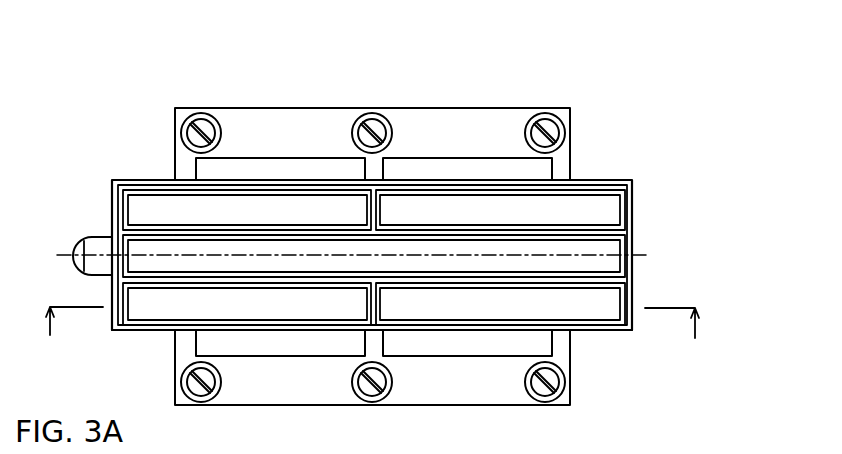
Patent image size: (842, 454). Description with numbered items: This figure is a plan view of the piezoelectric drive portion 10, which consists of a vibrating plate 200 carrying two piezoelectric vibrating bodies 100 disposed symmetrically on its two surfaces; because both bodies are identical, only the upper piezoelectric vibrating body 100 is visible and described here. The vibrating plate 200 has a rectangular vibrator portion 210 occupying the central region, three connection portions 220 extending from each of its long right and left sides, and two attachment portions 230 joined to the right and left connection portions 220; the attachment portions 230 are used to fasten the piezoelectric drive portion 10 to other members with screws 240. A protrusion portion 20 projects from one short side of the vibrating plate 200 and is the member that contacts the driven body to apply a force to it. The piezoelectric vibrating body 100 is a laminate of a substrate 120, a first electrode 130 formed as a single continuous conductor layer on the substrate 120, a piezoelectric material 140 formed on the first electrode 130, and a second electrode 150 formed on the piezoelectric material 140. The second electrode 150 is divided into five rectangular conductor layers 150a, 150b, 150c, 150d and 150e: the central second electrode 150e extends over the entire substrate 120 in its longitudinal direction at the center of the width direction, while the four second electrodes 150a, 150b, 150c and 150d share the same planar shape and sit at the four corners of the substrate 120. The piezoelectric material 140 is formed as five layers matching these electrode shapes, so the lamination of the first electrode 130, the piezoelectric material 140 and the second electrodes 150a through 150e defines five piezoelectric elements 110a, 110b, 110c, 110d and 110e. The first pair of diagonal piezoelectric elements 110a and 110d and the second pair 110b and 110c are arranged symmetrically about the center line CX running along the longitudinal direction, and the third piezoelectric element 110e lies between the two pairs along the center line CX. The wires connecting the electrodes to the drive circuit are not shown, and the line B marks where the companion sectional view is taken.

The piezoelectric drive portion 10 is at (668, 66).
The protrusion portion 20 is at (87, 236).
The piezoelectric vibrating body 100 is at (660, 100).
The piezoelectric element 110a is at (193, 221).
The piezoelectric element 110b is at (446, 221).
The piezoelectric element 110c is at (193, 317).
The piezoelectric element 110d is at (446, 317).
The third piezoelectric element 110e is at (315, 266).
The substrate 120 is at (656, 194).
The first electrode 130 is at (623, 189).
The piezoelectric material 140 is at (612, 189).
The second electrode 150 is at (597, 189).
The second electrode 150a is at (247, 210).
The second electrode 150b is at (500, 210).
The second electrode 150c is at (247, 304).
The second electrode 150d is at (500, 304).
The second electrode 150e is at (374, 256).
The vibrating plate 200 is at (658, 220).
The vibrator portion 210 is at (605, 330).
The connection portion 220 is at (394, 170).
The attachment portion 230 is at (488, 108).
The screw 240 is at (560, 108).
The center line CX is at (366, 256).
The Line B- B is at (373, 335).